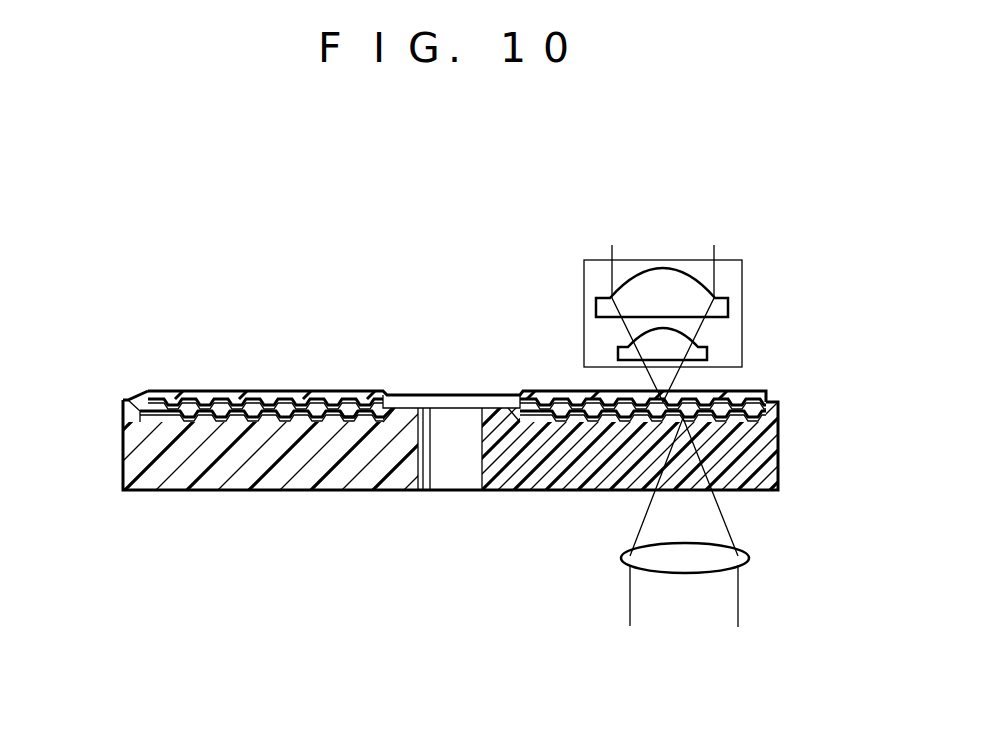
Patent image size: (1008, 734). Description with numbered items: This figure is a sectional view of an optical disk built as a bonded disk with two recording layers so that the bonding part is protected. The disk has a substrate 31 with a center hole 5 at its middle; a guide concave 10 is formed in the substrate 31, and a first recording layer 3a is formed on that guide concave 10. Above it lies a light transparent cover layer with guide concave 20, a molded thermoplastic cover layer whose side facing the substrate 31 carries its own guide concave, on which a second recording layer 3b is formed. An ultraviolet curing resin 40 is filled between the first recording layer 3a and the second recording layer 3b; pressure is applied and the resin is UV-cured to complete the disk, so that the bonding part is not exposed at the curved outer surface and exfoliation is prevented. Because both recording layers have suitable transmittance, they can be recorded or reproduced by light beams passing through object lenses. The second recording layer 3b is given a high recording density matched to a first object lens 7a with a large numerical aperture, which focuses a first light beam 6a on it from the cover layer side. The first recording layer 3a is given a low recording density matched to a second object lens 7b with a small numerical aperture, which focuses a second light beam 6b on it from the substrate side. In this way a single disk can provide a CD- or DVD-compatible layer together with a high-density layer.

The ultraviolet curing resin 40 is at (143, 400).
The second recording layer 3b is at (197, 403).
The light transparent cover layer with guide concave 20 is at (347, 392).
The first object lens 7a is at (584, 275).
The first light beam 6a is at (627, 266).
The first recording layer 3a is at (218, 418).
The substrate 31 is at (147, 465).
The guide concave 10 is at (347, 415).
The center hole 5 is at (418, 458).
The second object lens 7b is at (738, 566).
The second light beam 6b is at (629, 604).